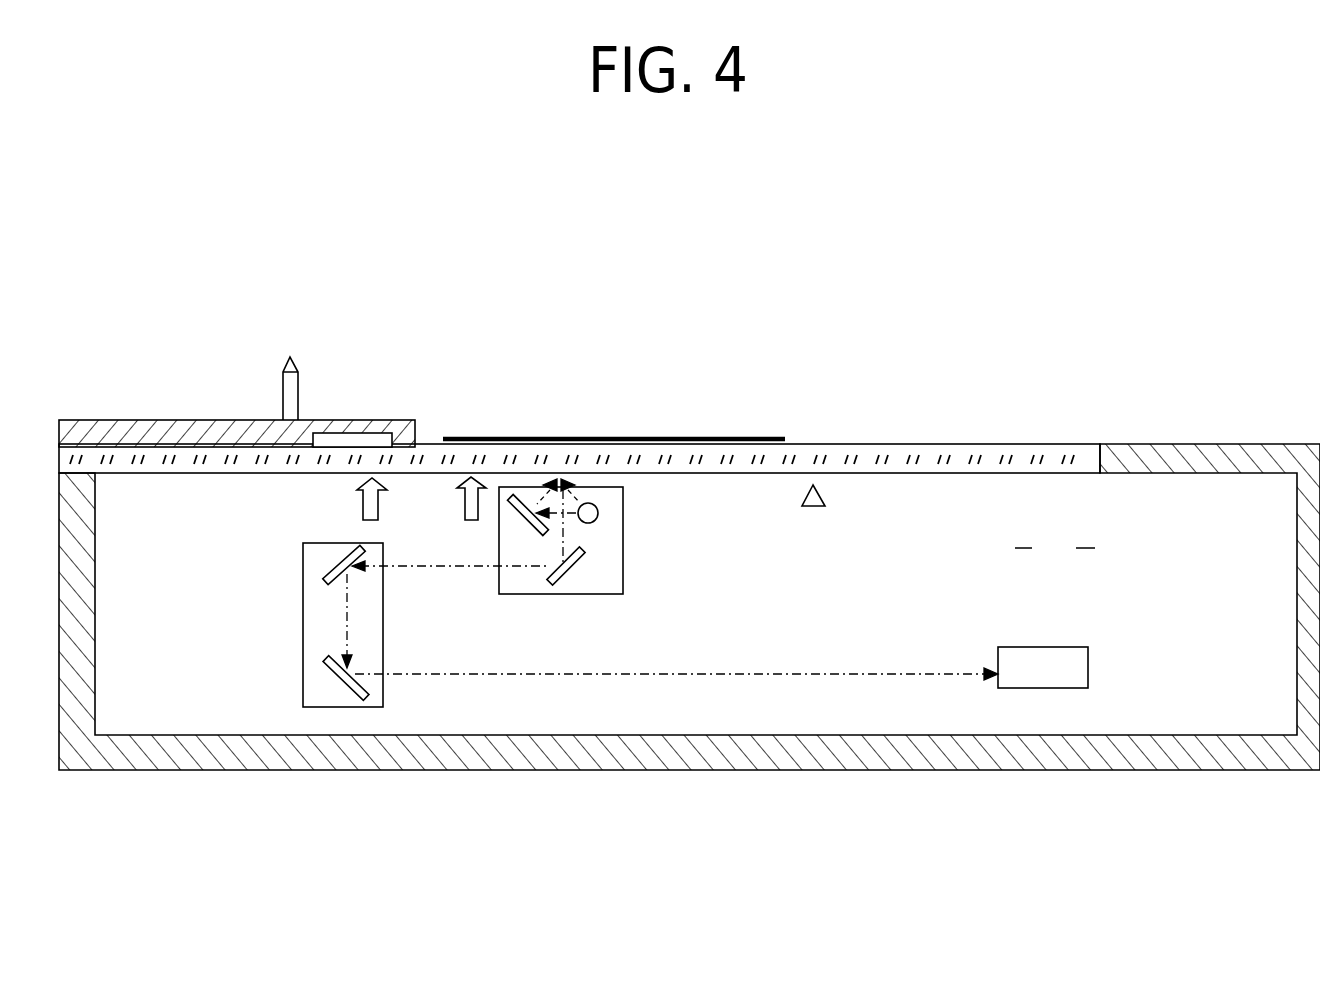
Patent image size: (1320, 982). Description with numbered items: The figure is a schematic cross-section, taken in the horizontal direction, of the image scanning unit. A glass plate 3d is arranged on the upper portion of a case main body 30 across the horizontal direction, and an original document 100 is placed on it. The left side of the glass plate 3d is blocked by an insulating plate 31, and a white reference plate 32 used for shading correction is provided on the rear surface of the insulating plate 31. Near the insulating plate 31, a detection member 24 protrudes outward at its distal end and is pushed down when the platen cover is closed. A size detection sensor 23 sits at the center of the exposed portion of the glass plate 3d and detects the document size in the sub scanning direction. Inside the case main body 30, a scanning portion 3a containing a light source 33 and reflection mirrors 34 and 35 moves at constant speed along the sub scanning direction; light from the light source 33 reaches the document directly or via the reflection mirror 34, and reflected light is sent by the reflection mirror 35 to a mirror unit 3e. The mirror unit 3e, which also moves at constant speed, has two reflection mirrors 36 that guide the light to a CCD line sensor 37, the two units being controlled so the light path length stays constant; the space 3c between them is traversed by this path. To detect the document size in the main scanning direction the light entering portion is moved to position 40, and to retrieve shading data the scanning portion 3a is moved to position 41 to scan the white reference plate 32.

The case main body 30 is at (752, 769).
The glass plate 3d is at (927, 444).
The insulating plate 31 is at (193, 420).
The white reference plate 32 is at (343, 435).
The detection member 24 is at (289, 368).
The original document 100 is at (725, 440).
The position for retrieving shading data 41 is at (358, 499).
The position for detecting document size 40 is at (454, 498).
The scanning portion 3a is at (623, 580).
The reflection mirror 34 is at (527, 505).
The light source 33 is at (600, 513).
The reflection mirror 35 is at (563, 583).
The mirror unit 3e is at (303, 608).
The reflection mirrors 36 is at (345, 688).
The CCD line sensor 37 is at (1040, 688).
The size detection sensor 23 is at (829, 494).
The optical path space 3c is at (1055, 549).